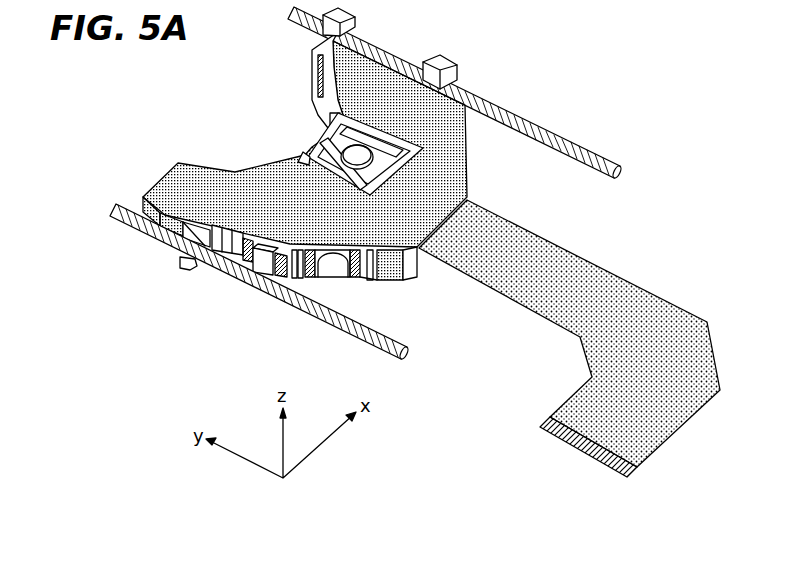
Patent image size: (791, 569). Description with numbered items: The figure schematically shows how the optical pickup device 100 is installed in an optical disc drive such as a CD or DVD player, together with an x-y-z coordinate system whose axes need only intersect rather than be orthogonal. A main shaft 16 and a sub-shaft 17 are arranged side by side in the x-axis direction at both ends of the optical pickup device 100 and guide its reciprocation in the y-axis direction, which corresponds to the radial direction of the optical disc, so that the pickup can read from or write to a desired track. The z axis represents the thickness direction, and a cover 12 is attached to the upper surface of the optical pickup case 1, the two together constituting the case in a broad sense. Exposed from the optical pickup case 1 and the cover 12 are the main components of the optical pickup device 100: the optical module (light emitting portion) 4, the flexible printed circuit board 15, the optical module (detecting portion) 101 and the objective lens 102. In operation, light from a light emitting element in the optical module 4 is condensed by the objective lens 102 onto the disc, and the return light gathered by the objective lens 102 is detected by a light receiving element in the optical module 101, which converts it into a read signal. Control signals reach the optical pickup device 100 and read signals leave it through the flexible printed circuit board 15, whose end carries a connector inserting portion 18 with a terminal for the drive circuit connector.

The optical pickup case 1 is at (312, 67).
The optical module (light emitting portion) 4 is at (360, 280).
The cover 12 is at (223, 186).
The flexible printed circuit board 15 is at (641, 313).
The main shaft 16 is at (507, 120).
The sub-shaft 17 is at (308, 313).
The connector inserting portion 18 is at (578, 443).
The optical pickup device 100 is at (303, 208).
The optical module (detecting portion) 101 is at (247, 268).
The objective lens 102 is at (330, 138).